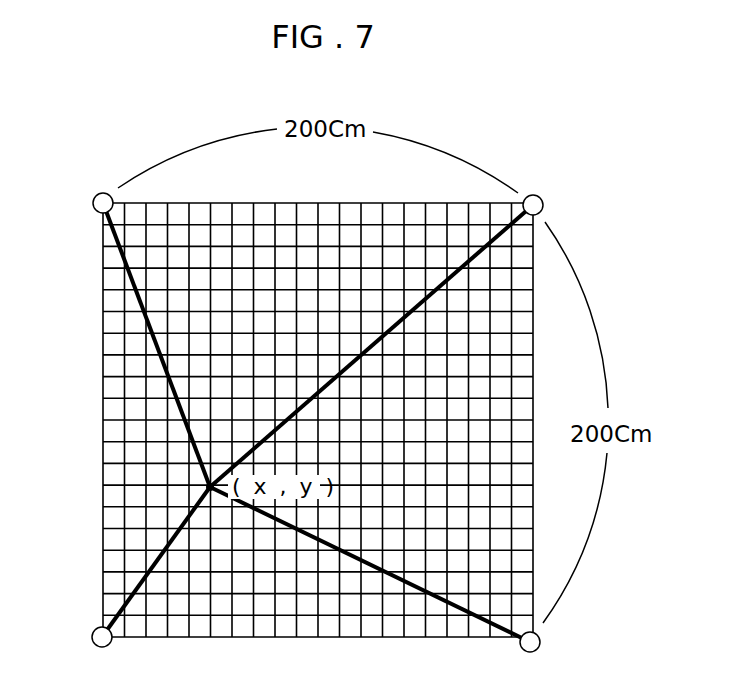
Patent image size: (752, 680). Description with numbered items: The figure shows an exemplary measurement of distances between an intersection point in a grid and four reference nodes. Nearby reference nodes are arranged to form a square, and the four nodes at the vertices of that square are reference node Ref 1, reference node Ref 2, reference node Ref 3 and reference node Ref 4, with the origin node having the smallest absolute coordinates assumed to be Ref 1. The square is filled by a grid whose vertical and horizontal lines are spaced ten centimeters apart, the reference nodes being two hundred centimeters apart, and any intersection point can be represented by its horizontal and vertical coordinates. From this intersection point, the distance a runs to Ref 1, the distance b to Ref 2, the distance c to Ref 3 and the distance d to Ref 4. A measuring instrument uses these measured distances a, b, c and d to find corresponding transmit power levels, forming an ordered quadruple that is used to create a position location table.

The reference node Ref 1 is at (70, 653).
The reference node Ref 2 is at (70, 191).
The reference node Ref 3 is at (567, 192).
The reference node Ref 4 is at (565, 656).
The distance a is at (156, 562).
The distance b is at (156, 345).
The distance c is at (371, 346).
The distance d is at (370, 564).